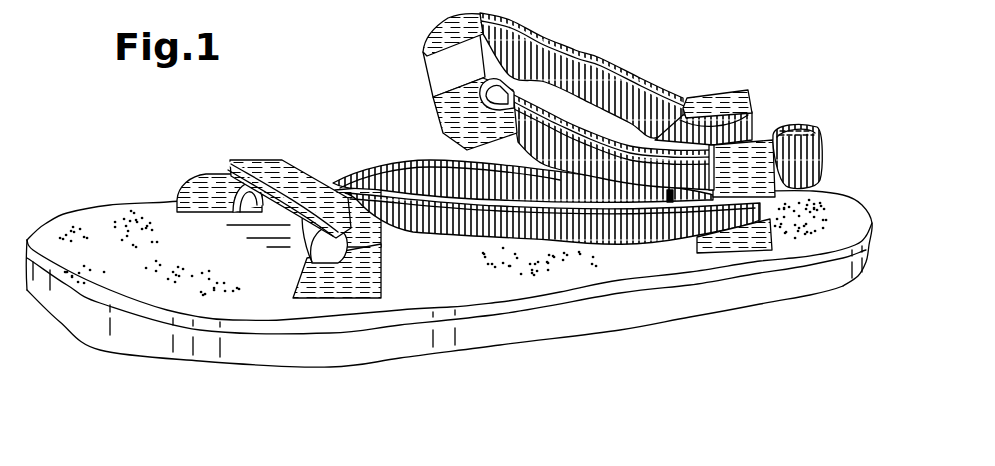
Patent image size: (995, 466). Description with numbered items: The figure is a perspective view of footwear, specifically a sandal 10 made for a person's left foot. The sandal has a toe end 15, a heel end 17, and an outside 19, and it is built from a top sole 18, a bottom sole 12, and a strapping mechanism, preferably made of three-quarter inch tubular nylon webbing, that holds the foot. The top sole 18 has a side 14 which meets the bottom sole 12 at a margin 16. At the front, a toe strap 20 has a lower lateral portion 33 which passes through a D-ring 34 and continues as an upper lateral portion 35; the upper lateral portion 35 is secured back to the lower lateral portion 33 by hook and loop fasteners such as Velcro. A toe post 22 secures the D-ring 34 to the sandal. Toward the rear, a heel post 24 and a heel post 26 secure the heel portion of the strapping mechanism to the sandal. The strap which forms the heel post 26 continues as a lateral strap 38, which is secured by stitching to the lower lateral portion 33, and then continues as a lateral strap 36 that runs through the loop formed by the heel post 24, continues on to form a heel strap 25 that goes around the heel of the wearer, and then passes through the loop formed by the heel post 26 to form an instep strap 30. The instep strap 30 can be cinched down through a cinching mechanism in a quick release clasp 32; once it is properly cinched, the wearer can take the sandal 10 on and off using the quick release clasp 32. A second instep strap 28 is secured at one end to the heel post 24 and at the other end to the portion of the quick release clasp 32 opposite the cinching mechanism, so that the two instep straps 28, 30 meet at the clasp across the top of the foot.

The sandal 10 is at (185, 156).
The bottom sole 12 is at (137, 340).
The side 14 is at (253, 322).
The toe end 15 is at (82, 248).
The margin 16 is at (78, 293).
The heel end 17 is at (842, 217).
The top sole 18 is at (490, 294).
The outside 19 is at (527, 276).
The toe strap 20 is at (180, 180).
The toe post 22 is at (345, 293).
The heel post 24 is at (710, 92).
The heel strap 25 is at (820, 127).
The heel post 26 is at (737, 240).
The instep strap 28 is at (563, 53).
The instep strap 30 is at (577, 143).
The quick release clasp 32 is at (440, 63).
The lower lateral portion 33 is at (230, 200).
The D-ring 34 is at (298, 193).
The upper lateral portion 35 is at (323, 187).
The lateral strap 36 is at (546, 255).
The lateral strap 38 is at (640, 235).